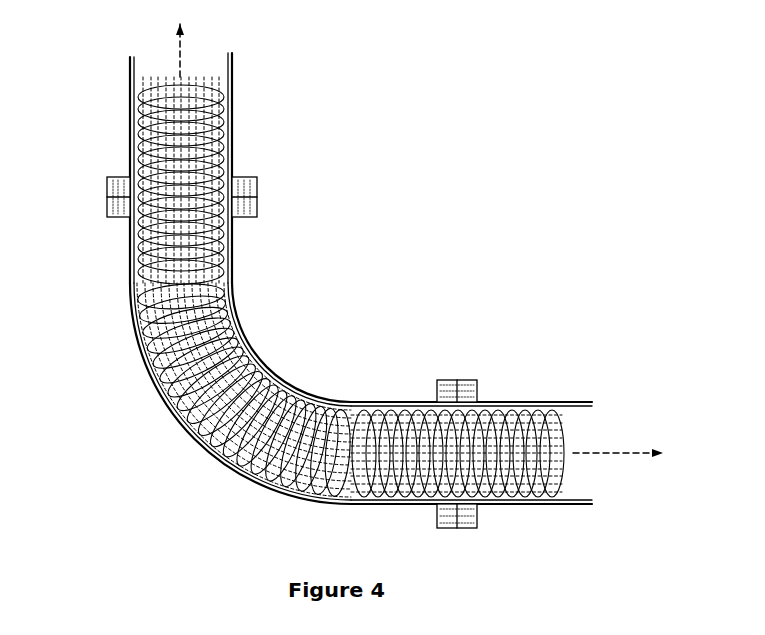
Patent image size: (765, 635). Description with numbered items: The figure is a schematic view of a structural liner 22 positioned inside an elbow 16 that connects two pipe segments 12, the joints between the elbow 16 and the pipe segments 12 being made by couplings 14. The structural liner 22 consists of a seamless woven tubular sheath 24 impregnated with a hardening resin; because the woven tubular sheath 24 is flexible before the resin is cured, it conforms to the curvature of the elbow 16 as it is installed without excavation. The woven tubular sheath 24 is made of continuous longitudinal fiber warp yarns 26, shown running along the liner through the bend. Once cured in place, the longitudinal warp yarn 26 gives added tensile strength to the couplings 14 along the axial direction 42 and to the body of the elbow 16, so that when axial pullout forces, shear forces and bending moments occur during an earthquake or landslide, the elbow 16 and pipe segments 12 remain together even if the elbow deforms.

The pipe segments 12 is at (328, 278).
The couplings 14 is at (330, 354).
The elbow 16 is at (289, 344).
The structural liner 22 is at (293, 413).
The woven tubular sheath 24 is at (225, 390).
The longitudinal fiber warp yarns 26 is at (159, 72).
The axial direction 42 is at (429, 233).